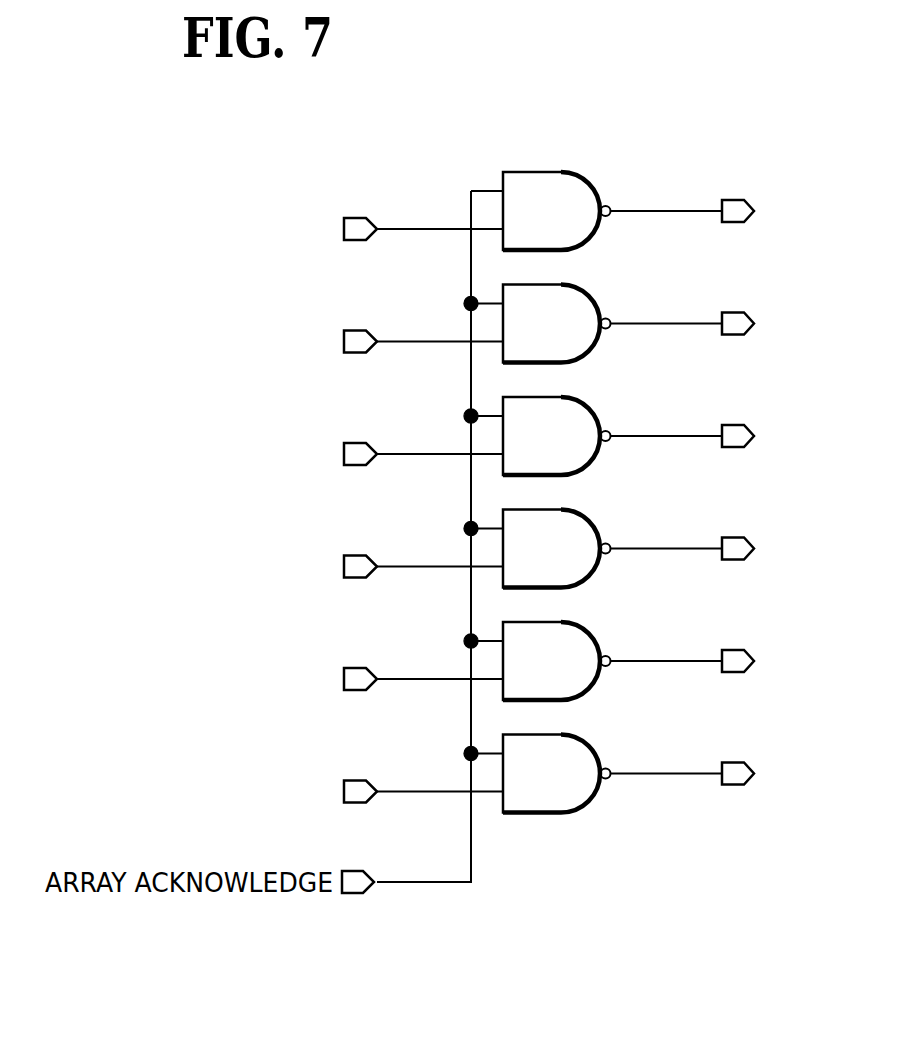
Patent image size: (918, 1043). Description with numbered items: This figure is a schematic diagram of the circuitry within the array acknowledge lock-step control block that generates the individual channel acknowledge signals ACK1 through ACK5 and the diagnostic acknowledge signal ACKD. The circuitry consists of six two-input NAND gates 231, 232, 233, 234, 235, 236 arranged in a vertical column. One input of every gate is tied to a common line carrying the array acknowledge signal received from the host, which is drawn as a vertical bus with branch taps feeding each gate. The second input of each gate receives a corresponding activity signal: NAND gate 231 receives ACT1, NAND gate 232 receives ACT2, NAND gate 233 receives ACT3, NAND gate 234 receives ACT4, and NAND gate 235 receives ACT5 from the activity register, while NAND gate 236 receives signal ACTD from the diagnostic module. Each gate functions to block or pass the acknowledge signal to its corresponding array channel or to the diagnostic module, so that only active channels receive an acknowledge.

The two-input NAND gate 231 is at (582, 175).
The two-input NAND gate 232 is at (583, 290).
The two-input NAND gate 233 is at (583, 403).
The two-input NAND gate 234 is at (583, 516).
The two-input NAND gate 235 is at (583, 628).
The two-input NAND gate 236 is at (583, 740).